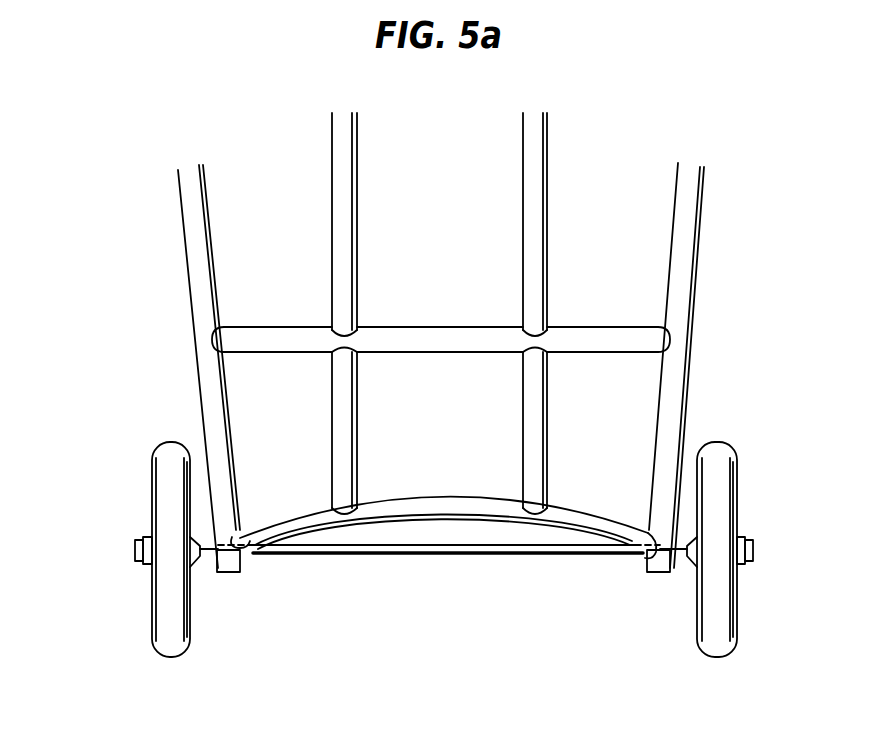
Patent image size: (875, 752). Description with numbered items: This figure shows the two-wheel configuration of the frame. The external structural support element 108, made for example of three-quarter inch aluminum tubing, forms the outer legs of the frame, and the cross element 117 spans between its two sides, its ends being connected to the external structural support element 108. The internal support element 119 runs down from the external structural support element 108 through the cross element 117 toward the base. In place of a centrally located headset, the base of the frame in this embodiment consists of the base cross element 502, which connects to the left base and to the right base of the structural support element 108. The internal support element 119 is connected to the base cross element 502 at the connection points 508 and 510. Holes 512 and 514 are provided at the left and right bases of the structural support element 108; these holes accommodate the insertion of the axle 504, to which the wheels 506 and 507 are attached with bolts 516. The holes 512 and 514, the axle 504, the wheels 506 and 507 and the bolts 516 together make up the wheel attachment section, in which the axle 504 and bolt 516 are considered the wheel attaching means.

The external structural support element 108 is at (185, 243).
The cross element 117 is at (447, 327).
The internal support element 119 is at (388, 421).
The base cross element 502 is at (435, 497).
The axle 504 is at (450, 557).
The wheel 506 is at (202, 633).
The wheel 507 is at (742, 633).
The connection point 508 is at (351, 514).
The connection point 510 is at (538, 514).
The hole 512 is at (231, 572).
The hole 514 is at (659, 572).
The bolt 516 is at (135, 550).